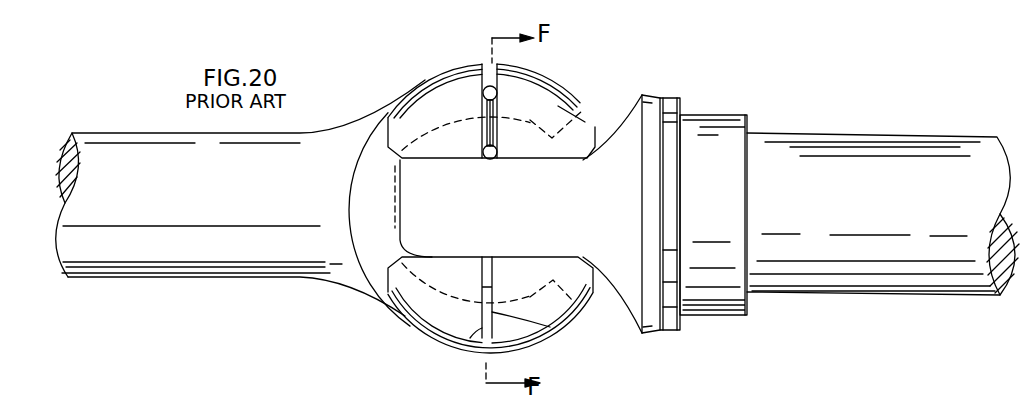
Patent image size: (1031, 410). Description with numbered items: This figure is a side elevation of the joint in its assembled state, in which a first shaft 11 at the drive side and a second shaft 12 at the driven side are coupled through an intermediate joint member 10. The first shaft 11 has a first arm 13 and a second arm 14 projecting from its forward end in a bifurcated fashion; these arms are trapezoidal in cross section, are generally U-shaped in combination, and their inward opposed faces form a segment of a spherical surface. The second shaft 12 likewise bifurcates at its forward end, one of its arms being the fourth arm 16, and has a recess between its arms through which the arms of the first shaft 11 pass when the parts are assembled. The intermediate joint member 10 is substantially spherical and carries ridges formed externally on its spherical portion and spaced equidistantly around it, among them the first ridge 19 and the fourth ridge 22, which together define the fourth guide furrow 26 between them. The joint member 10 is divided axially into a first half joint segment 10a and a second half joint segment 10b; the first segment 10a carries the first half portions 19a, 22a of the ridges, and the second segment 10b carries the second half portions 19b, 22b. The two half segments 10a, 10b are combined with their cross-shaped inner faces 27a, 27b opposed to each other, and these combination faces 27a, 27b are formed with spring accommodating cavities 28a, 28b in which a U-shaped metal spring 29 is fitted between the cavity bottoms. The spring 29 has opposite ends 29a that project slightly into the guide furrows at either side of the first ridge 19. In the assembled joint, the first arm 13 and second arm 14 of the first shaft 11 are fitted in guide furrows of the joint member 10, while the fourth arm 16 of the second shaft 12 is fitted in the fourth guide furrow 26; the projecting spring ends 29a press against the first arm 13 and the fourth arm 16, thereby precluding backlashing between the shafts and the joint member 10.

The intermediate joint member 10 is at (608, 125).
The first divided half joint segment 10a is at (402, 310).
The second divided half joint segment 10b is at (620, 302).
The first shaft 11 is at (142, 283).
The second shaft 12 is at (875, 303).
The first arm 13 is at (563, 83).
The second arm 14 is at (540, 340).
The fourth arm 16 is at (384, 112).
The first ridge 19 is at (433, 100).
The first half portion of the first ridge 19a is at (412, 108).
The second half portion of the first ridge 19b is at (598, 103).
The fourth ridge 22 is at (440, 322).
The first half portion of the fourth ridge 22a is at (400, 294).
The second half portion of the fourth ridge 22b is at (580, 297).
The fourth guide furrow 26 is at (428, 244).
The cross-shaped inner face of the first half segment 27a is at (563, 333).
The cross-shaped inner face of the second half segment 27b is at (475, 333).
The spring accommodating cavity 28a is at (488, 68).
The spring accommodating cavity 28b is at (499, 66).
The U-shaped metal spring 29 is at (478, 132).
The spring end 29a is at (498, 92).